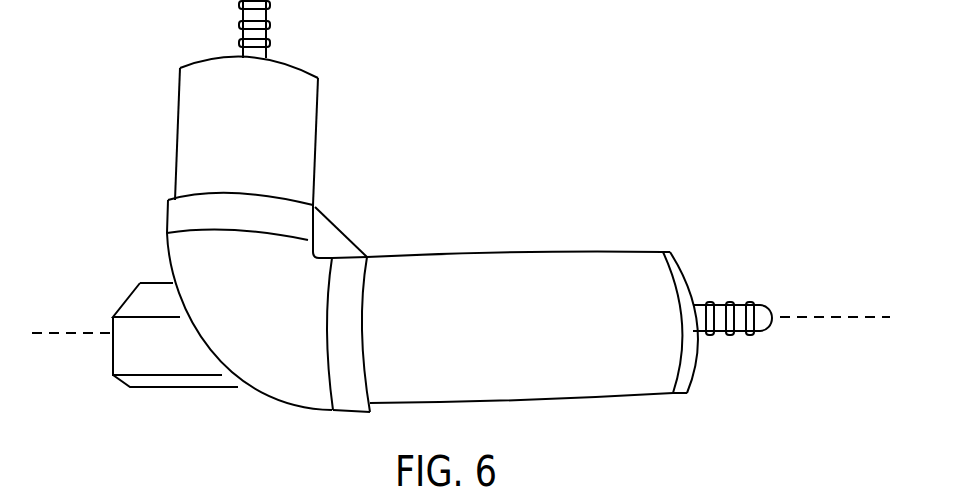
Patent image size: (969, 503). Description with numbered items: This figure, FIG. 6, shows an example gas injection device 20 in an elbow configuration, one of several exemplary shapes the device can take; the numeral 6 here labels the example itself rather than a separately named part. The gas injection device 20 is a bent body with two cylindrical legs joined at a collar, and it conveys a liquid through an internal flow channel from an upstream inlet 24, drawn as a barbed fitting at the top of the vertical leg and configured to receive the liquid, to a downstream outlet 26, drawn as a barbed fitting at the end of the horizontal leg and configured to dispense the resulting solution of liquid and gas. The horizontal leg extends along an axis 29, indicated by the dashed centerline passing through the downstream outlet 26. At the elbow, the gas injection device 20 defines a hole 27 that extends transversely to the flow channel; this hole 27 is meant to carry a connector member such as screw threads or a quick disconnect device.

The fitting assembly 6 is at (441, 87).
The gas injection device 20 is at (500, 167).
The upstream inlet 24 is at (176, 33).
The downstream outlet 26 is at (728, 372).
The hole 27 is at (101, 365).
The axis 29 is at (807, 317).